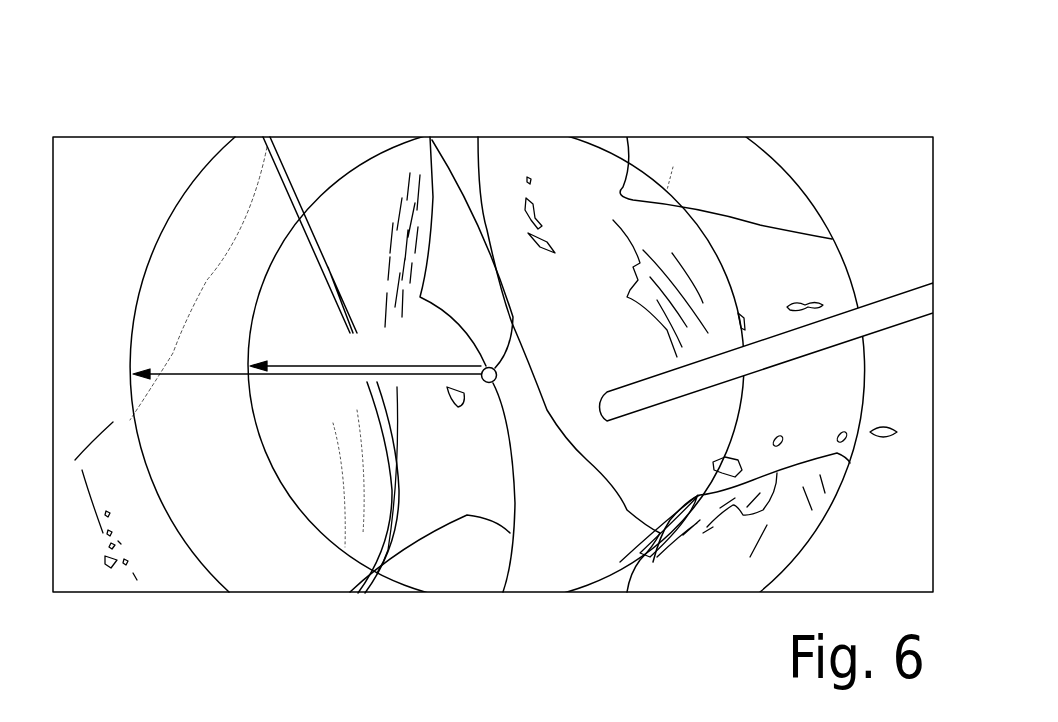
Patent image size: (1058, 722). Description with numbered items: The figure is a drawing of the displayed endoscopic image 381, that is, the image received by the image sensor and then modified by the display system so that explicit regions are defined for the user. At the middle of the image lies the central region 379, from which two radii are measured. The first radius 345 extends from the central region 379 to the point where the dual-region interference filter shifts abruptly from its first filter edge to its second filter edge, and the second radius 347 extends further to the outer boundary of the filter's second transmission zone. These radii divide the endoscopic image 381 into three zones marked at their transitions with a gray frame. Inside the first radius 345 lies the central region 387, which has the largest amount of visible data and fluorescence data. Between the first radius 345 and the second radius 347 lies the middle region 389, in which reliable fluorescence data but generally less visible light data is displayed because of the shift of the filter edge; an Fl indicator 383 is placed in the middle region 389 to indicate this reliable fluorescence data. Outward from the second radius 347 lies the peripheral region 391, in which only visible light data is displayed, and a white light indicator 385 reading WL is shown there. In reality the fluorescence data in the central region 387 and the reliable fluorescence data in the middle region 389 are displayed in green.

The endoscopic image 381 is at (356, 118).
The central region 379 is at (478, 137).
The Fl indicator 383 is at (710, 153).
The white light indicator 385 is at (862, 153).
The first radius 345 is at (365, 352).
The second radius 347 is at (307, 389).
The central region 387 is at (470, 493).
The middle region 389 is at (300, 565).
The peripheral region 391 is at (155, 560).